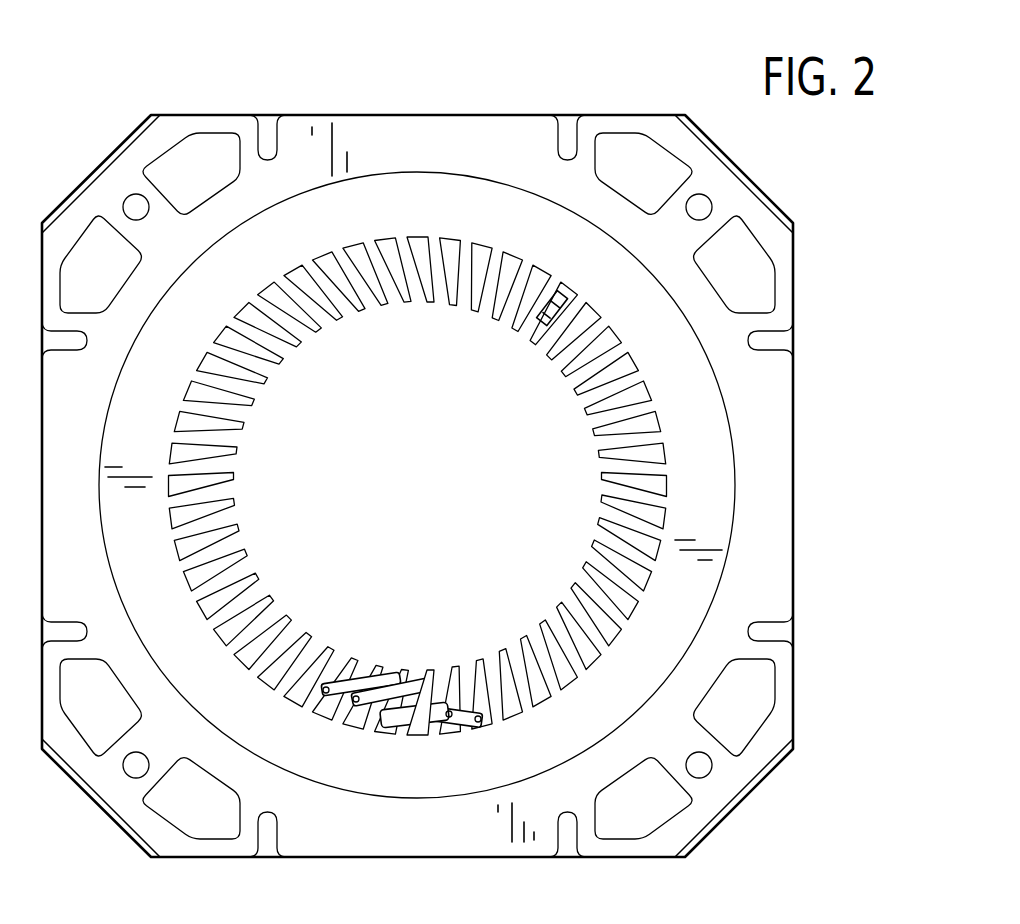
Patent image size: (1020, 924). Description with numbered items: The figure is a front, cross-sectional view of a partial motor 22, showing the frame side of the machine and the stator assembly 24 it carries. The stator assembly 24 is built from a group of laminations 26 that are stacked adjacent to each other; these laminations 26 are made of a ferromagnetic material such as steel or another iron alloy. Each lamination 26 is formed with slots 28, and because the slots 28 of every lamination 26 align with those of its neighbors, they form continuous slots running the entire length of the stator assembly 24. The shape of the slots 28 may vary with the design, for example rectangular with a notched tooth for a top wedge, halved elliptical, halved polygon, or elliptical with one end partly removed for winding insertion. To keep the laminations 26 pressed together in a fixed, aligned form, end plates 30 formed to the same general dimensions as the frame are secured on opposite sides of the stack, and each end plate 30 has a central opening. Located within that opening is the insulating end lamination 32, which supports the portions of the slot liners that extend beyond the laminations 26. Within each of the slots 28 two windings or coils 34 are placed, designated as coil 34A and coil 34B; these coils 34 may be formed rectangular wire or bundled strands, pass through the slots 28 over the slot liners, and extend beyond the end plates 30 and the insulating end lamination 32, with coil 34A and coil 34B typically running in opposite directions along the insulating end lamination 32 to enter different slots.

The partial motor 22 is at (447, 441).
The stator assembly 24 is at (492, 482).
The laminations 26 is at (515, 485).
The slots 28 is at (653, 547).
The end plates 30 is at (772, 463).
The insulating end lamination 32 is at (709, 515).
The coils 34 is at (393, 707).
The first coil 34A is at (428, 732).
The second coil 34B is at (386, 700).